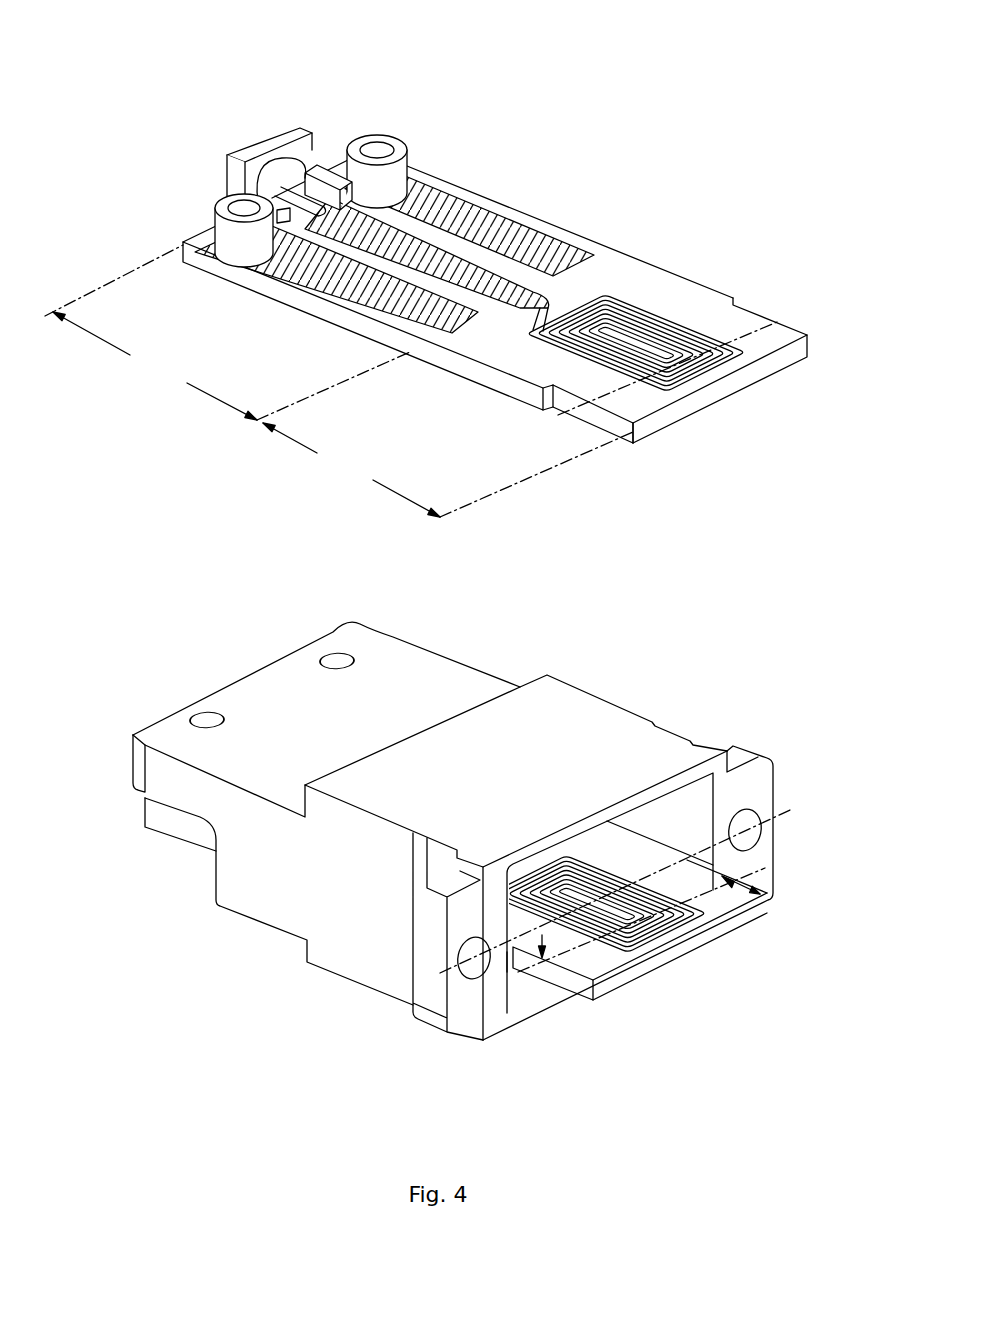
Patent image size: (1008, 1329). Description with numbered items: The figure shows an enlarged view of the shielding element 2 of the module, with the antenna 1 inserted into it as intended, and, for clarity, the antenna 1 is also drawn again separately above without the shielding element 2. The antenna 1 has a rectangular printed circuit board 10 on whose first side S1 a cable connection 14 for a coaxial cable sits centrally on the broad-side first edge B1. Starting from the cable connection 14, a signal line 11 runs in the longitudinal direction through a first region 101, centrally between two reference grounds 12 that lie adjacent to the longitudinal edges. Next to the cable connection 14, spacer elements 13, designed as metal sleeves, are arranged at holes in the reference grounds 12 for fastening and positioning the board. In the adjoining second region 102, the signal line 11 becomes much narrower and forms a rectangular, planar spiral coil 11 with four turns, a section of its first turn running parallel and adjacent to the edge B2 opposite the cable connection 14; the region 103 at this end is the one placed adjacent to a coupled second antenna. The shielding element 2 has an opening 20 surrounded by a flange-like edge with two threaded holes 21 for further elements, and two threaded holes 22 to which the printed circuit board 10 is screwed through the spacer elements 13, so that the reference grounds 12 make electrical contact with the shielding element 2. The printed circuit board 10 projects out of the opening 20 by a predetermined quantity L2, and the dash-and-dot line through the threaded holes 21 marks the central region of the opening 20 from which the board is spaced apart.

The antenna 1 is at (193, 88).
The printed circuit board 10 is at (273, 288).
The first region 101 is at (227, 332).
The second region 102 is at (448, 470).
The region situated opposite the cable connection 103 is at (780, 337).
The signal line 11 is at (662, 330).
The reference grounds 12 is at (523, 236).
The spacer elements 13 is at (402, 138).
The cable connection 14 is at (297, 132).
The first edge B1 is at (202, 230).
The edge situated opposite the cable connection B2 is at (670, 415).
The first side S1 is at (625, 280).
The shielding element 2 is at (568, 707).
The opening 20 is at (527, 993).
The threaded holes 21 is at (467, 977).
The threaded holes 22 is at (323, 656).
The predetermined quantity L2 is at (753, 887).